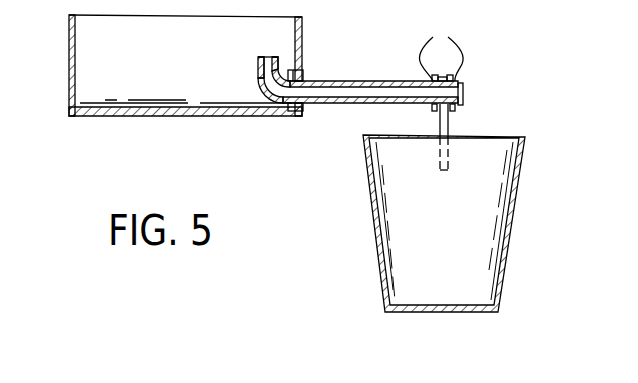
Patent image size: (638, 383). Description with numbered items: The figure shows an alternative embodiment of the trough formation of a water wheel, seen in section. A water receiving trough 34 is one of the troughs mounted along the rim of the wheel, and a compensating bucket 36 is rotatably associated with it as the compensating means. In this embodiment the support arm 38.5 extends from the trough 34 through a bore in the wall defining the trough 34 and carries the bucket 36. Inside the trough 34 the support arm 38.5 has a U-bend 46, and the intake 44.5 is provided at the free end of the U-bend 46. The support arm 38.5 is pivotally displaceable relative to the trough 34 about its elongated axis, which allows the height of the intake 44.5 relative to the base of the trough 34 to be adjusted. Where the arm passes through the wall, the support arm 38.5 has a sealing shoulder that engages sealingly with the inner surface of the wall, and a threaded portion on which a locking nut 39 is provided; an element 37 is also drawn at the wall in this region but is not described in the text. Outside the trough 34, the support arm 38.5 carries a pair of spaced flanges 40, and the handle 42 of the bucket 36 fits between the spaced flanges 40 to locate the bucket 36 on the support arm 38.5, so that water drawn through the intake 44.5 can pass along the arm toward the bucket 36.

The water receiving trough 34 is at (68, 87).
The compensating bucket 36 is at (503, 265).
The upper fitting nut 37 is at (290, 70).
The support arm 38.5 is at (368, 81).
The locking nut 39 is at (302, 111).
The spaced flanges 40 is at (441, 48).
The handle 42 is at (447, 125).
The intake 44.5 is at (268, 62).
The U-bend 46 is at (259, 82).